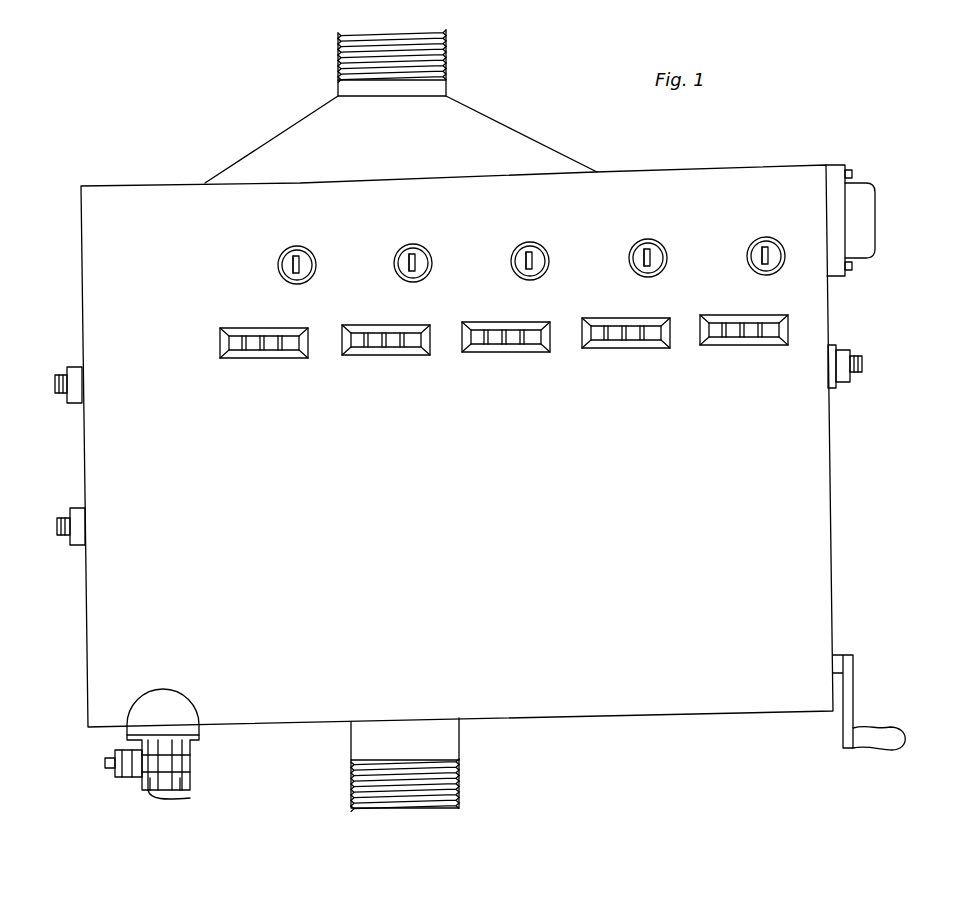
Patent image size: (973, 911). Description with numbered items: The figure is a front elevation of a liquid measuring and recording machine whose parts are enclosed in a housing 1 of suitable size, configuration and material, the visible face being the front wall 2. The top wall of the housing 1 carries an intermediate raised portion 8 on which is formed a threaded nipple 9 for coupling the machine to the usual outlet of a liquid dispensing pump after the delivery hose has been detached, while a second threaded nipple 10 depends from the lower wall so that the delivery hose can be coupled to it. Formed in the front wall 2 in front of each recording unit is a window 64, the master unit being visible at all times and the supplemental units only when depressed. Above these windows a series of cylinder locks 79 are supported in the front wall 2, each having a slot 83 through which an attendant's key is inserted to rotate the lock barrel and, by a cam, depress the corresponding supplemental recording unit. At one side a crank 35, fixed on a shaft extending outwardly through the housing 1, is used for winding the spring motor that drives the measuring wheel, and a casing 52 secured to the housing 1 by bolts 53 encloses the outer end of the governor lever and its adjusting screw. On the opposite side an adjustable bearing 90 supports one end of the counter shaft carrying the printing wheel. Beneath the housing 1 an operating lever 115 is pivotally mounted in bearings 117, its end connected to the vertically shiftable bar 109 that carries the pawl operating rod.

The housing 1 is at (465, 446).
The front wall 2 is at (81, 268).
The intermediate raised portion 8 is at (490, 142).
The threaded nipple 9 is at (427, 63).
The threaded nipple 10 is at (446, 742).
The crank 35 is at (852, 700).
The casing 52 is at (860, 222).
The bolts 53 is at (852, 172).
The window 64 is at (285, 352).
The cylinder locks 79 is at (397, 248).
The slots 83 is at (296, 256).
The adjustable bearing 90 is at (57, 524).
The vertically shiftable bar 109 is at (127, 746).
The operating lever 115 is at (162, 760).
The bearings 117 is at (150, 786).